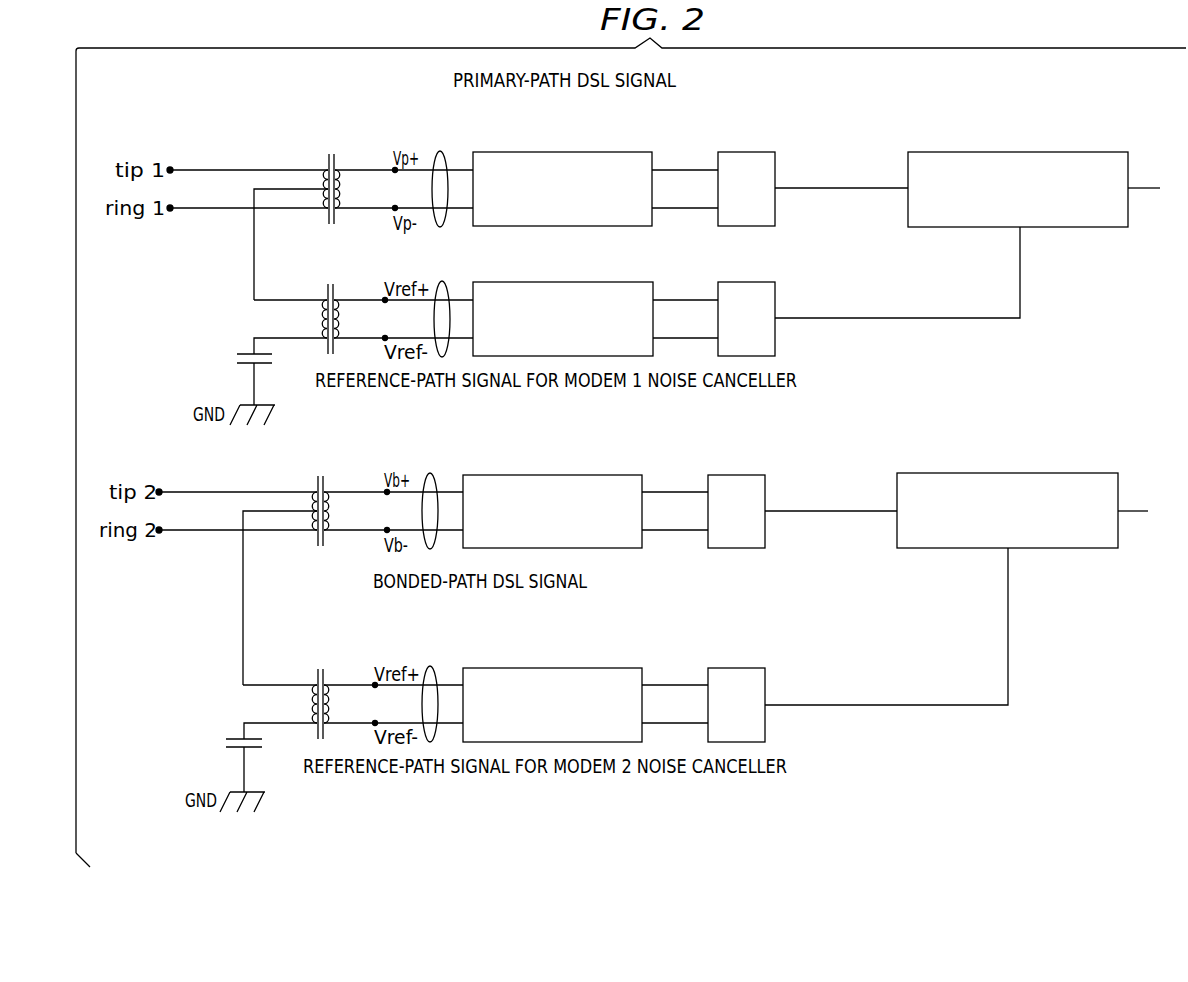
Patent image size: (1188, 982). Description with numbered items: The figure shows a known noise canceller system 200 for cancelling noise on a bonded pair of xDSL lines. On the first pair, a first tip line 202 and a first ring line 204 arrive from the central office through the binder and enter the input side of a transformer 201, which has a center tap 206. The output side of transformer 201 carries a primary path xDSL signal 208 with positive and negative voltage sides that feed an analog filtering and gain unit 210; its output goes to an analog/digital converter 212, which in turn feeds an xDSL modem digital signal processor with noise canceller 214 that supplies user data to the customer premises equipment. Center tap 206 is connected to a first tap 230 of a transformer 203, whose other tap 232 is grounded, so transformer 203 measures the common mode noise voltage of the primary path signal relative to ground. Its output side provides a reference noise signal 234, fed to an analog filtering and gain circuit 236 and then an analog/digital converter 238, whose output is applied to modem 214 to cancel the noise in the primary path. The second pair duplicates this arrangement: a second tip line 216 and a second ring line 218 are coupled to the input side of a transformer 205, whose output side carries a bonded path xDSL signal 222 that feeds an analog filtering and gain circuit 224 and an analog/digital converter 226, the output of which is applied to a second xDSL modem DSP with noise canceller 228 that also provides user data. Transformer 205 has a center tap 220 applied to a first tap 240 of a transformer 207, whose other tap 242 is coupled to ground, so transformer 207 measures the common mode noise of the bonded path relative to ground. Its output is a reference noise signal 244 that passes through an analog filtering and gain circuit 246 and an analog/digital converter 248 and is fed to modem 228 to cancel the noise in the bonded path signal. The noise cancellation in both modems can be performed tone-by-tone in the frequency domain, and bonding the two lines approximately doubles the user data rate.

The known noise canceller system 200 is at (877, 773).
The transformer 201 is at (328, 163).
The tip 1 line 202 is at (248, 168).
The transformer 203 is at (331, 290).
The ring 1 line 204 is at (280, 209).
The transformer 205 is at (317, 486).
The center tap 206 is at (250, 192).
The transformer 207 is at (320, 674).
The primary path xDSL signal 208 is at (444, 152).
The analog filtering and gain unit 210 is at (560, 152).
The analog/digital converter 212 is at (745, 152).
The xDSL modem digital signal processor with noise canceller 214 is at (1016, 152).
The tip 2 line 216 is at (238, 490).
The ring 2 line 218 is at (270, 531).
The center tap 220 is at (240, 514).
The bonded path xDSL signal 222 is at (434, 474).
The analog filtering and gain circuit 224 is at (550, 475).
The analog/digital converter 226 is at (735, 475).
The xDSL modem 2 DSP with noise canceller 228 is at (1008, 473).
The first tap 230 is at (276, 299).
The other tap 232 is at (256, 337).
The reference noise signal 234 is at (446, 282).
The analog filtering and gain circuit 236 is at (560, 282).
The analog/digital converter 238 is at (745, 282).
The first tap 240 is at (267, 684).
The other tap 242 is at (246, 722).
The reference noise signal 244 is at (434, 667).
The analog filtering and gain circuit 246 is at (550, 668).
The analog/digital converter 248 is at (735, 668).